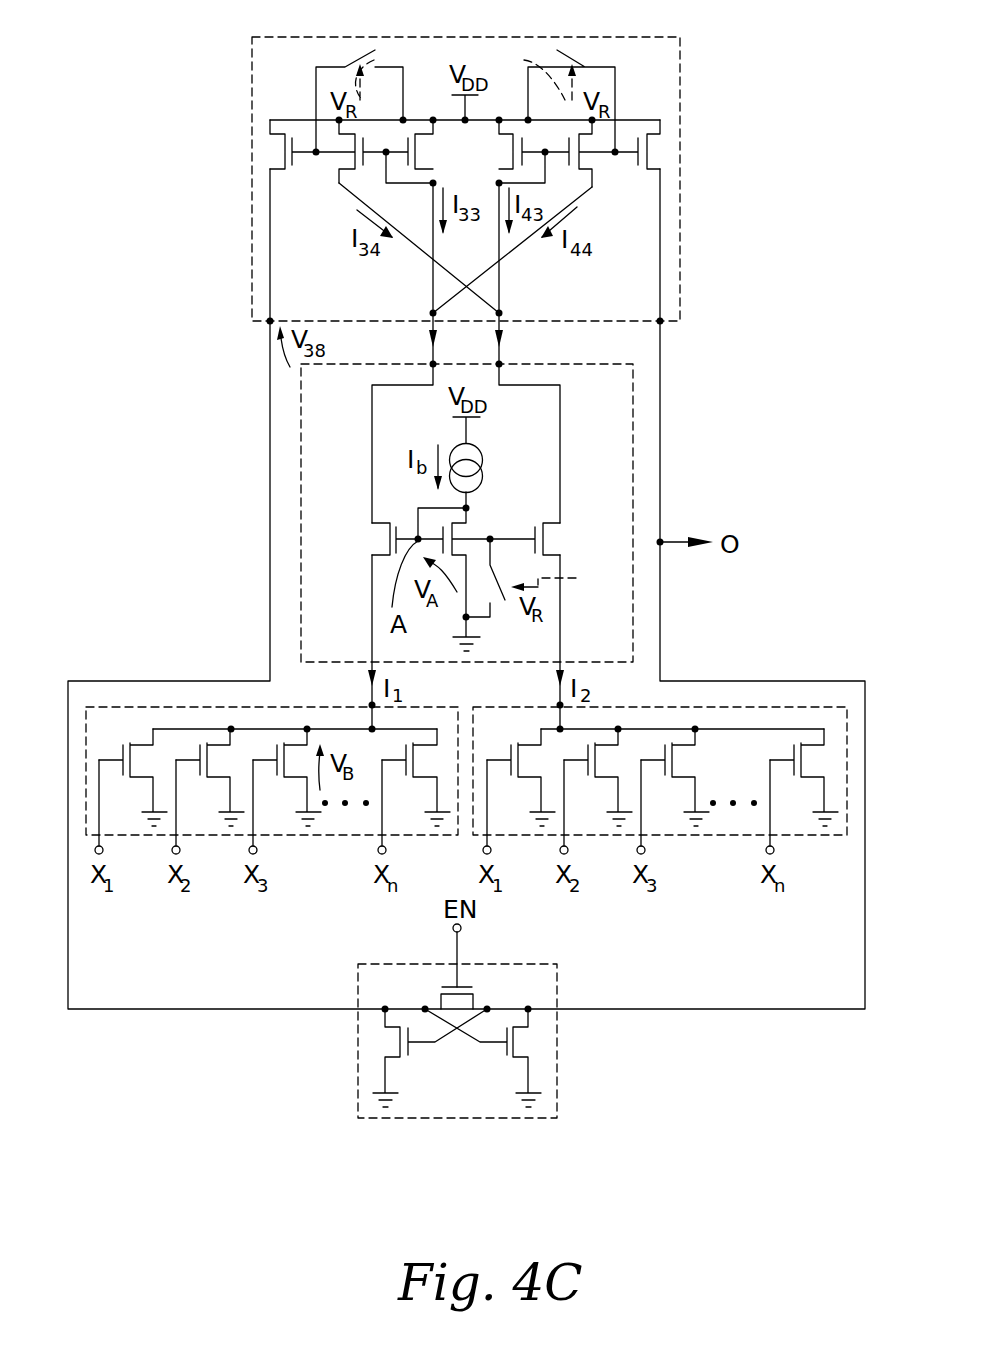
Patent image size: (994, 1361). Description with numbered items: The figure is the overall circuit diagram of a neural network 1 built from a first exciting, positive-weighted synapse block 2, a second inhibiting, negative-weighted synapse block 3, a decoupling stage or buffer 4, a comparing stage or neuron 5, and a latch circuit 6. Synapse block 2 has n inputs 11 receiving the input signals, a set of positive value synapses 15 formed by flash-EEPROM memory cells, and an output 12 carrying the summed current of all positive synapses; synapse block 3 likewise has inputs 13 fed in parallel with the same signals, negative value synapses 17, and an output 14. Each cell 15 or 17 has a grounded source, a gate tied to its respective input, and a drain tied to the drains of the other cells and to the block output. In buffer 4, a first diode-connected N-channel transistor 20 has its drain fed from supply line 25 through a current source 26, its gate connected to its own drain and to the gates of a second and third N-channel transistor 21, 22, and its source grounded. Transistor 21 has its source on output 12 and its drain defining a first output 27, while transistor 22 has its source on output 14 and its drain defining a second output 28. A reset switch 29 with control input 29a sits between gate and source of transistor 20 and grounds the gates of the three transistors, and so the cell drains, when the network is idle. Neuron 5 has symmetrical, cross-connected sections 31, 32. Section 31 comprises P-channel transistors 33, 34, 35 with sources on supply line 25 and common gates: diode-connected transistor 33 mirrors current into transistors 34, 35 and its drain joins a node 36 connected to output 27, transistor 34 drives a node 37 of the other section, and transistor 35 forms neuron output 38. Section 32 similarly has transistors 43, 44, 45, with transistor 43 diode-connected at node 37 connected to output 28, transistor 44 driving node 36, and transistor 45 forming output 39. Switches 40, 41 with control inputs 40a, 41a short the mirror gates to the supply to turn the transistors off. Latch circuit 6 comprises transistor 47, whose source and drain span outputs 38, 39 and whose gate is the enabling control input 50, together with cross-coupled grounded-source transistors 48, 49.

The neural network 1 is at (263, 1064).
The first exciting synapse block 2 is at (86, 770).
The second inhibiting synapse block 3 is at (847, 770).
The decoupling stage 4 is at (633, 440).
The comparing stage 5 is at (680, 68).
The latch circuit 6 is at (557, 978).
The inputs 11 is at (107, 853).
The output 12 is at (368, 703).
The inputs 13 is at (495, 853).
The output 14 is at (556, 703).
The positive value synapses 15 is at (144, 779).
The negative value synapses 17 is at (532, 779).
The first diode-connected N-channel MOS transistor 20 is at (455, 531).
The second N-channel MOS transistor 21 is at (372, 540).
The third N-channel MOS transistor 22 is at (560, 540).
The supply line 25 is at (452, 96).
The current source 26 is at (482, 467).
The first output 27 is at (430, 363).
The second output 28 is at (502, 363).
The switch 29 is at (507, 563).
The control input 29a is at (567, 581).
The first section 31 is at (340, 214).
The second section 32 is at (594, 214).
The P-channel MOS transistor 33 is at (418, 140).
The P-channel MOS transistor 34 is at (348, 158).
The P-channel MOS transistor 35 is at (268, 152).
The node 36 is at (430, 312).
The node 37 is at (502, 312).
The output 38 is at (268, 323).
The output 39 is at (663, 323).
The switch 40 is at (357, 62).
The control input 40a is at (389, 71).
The switch 41 is at (575, 55).
The control input 41a is at (533, 72).
The P-channel MOS transistor 43 is at (500, 163).
The P-channel MOS transistor 44 is at (583, 154).
The P-channel MOS transistor 45 is at (662, 152).
The N-channel MOS transistor 47 is at (477, 1000).
The N-channel MOS transistor 48 is at (392, 1060).
The N-channel MOS transistor 49 is at (520, 1060).
The control input 50 is at (462, 928).